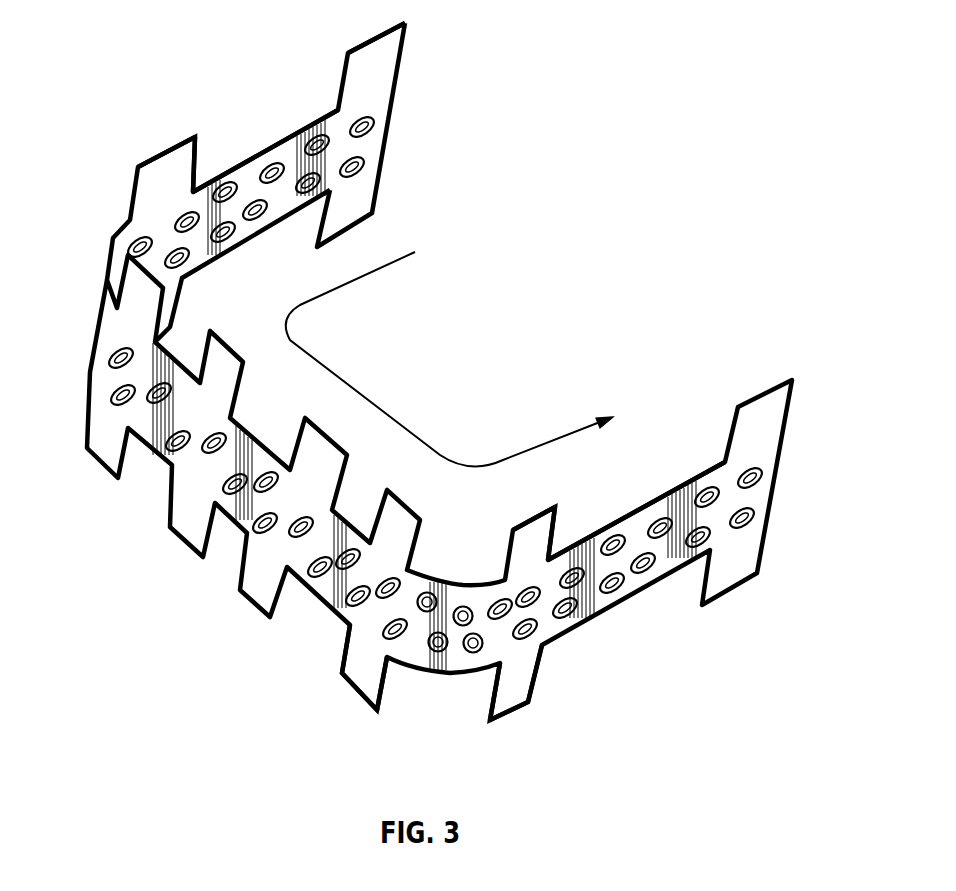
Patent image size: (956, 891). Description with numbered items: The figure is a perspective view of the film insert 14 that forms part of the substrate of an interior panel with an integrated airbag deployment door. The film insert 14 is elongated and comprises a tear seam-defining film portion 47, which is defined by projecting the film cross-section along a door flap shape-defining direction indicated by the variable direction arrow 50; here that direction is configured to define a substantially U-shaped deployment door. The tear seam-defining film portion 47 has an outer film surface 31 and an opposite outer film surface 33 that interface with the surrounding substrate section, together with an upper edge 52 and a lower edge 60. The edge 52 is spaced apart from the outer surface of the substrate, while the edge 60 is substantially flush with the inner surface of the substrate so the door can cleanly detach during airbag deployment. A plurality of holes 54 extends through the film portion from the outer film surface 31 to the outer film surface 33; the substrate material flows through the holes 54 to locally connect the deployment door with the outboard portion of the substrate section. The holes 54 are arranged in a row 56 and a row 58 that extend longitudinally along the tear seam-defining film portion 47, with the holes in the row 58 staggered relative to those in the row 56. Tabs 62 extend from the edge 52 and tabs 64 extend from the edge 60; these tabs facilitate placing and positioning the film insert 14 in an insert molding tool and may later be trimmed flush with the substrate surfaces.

The film insert 14 is at (767, 435).
The tabs 62 is at (388, 67).
The edge 52 is at (270, 148).
The row 58 is at (378, 127).
The row 56 is at (370, 167).
The holes 54 is at (108, 355).
The outer film surface 33 is at (295, 167).
The tear seam-defining film portion 47 is at (155, 423).
The outer film surface 31 is at (333, 597).
The tabs 64 is at (362, 675).
The edge 60 is at (437, 673).
The door flap shape-defining direction 50 is at (337, 376).